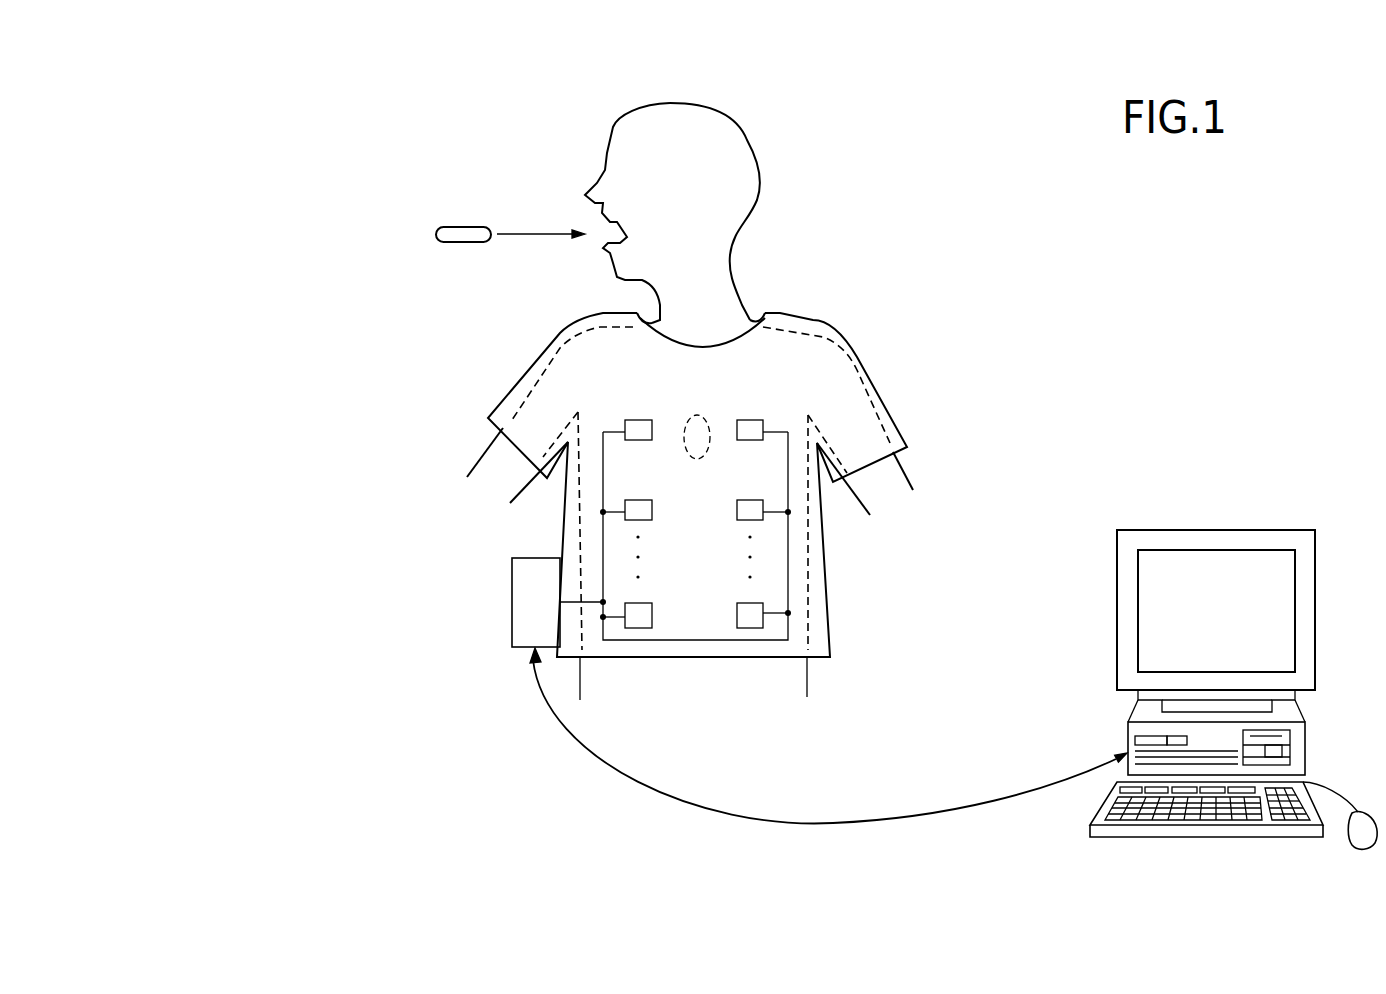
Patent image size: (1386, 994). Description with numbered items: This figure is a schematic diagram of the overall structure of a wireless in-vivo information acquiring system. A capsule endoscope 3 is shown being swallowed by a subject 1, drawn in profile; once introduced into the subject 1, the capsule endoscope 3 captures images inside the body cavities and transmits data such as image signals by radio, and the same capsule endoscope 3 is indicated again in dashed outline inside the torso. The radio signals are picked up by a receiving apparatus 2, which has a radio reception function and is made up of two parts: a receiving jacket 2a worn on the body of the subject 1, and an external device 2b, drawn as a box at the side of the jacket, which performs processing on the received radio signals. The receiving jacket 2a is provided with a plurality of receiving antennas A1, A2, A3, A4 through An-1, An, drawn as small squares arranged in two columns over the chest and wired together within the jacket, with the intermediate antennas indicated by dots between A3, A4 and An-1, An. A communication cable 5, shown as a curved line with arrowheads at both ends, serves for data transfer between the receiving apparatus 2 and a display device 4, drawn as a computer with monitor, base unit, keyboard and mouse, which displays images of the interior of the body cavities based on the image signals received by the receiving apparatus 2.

The subject 1 is at (728, 120).
The receiving apparatus 2 is at (230, 592).
The receiving jacket 2a is at (572, 485).
The external device 2b is at (512, 585).
The capsule endoscope 3 is at (465, 243).
The display device 4 is at (1198, 528).
The communication cable 5 is at (862, 823).
The receiving antenna A1 is at (634, 420).
The receiving antenna A2 is at (748, 420).
The receiving antenna A3 is at (634, 500).
The receiving antenna A4 is at (748, 500).
The receiving antenna An-1 is at (645, 603).
The receiving antenna An is at (750, 603).